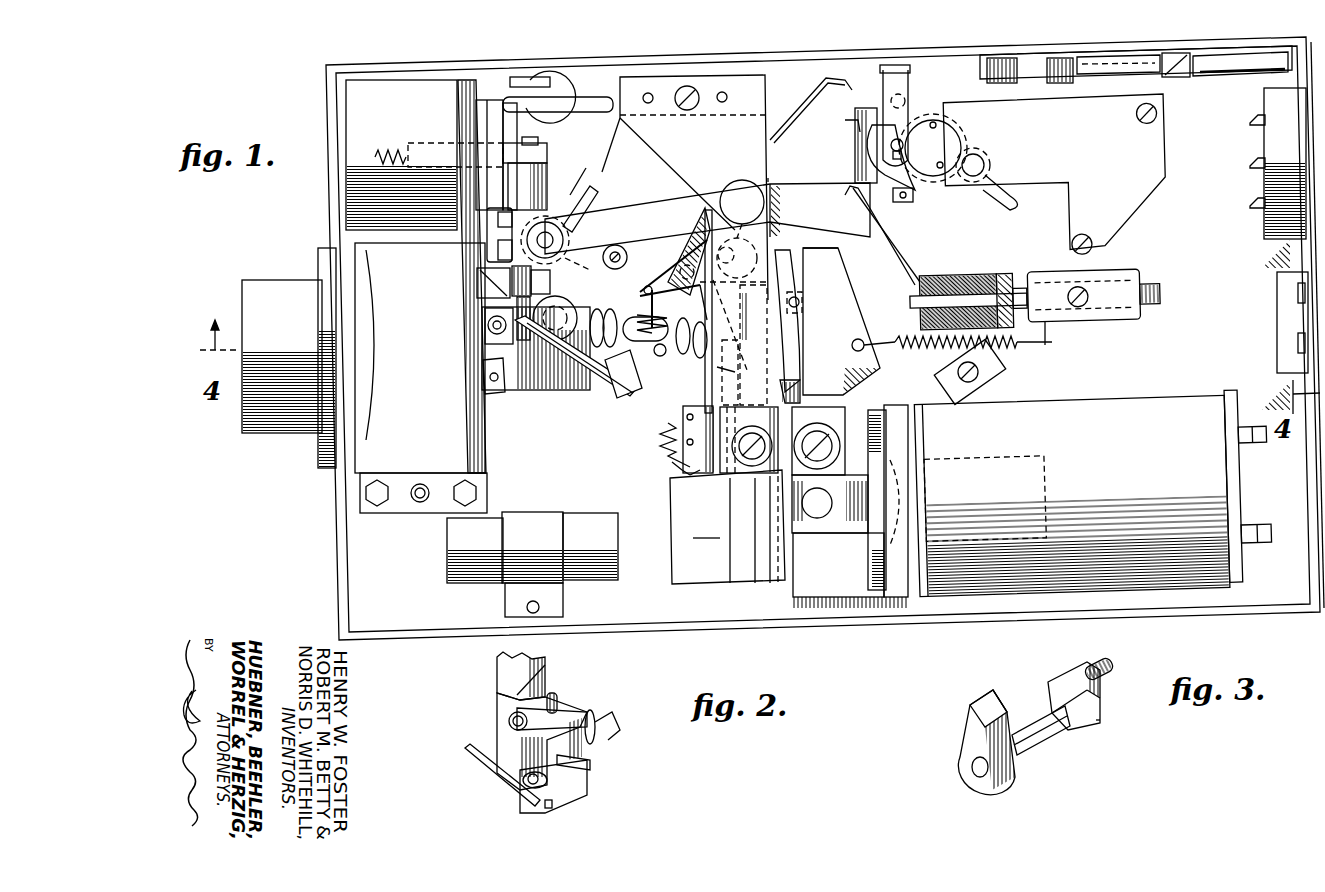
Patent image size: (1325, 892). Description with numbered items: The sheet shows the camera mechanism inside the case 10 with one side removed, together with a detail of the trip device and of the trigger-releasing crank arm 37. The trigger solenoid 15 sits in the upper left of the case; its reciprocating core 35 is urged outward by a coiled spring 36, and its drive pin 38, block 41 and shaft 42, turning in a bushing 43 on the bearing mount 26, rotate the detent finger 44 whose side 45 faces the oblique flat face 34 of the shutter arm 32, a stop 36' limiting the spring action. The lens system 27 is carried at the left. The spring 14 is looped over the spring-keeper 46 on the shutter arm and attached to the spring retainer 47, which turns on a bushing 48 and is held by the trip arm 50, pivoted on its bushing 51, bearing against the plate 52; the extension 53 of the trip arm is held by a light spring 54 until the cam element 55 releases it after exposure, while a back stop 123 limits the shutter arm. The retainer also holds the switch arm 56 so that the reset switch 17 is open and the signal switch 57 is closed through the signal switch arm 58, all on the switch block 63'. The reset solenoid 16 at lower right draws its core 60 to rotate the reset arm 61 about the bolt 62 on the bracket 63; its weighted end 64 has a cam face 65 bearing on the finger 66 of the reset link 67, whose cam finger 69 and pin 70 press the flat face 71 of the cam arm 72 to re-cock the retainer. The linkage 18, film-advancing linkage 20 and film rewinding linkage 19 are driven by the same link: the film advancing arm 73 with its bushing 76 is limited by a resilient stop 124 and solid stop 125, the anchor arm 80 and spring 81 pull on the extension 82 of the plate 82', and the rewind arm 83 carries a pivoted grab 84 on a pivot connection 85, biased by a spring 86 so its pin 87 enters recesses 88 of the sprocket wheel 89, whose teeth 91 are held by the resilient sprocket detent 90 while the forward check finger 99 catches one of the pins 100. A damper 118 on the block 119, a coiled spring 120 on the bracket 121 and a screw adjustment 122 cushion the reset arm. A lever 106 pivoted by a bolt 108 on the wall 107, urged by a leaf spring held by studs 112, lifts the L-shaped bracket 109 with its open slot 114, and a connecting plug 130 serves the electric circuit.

In FIG. 1, the case 10 is at (1115, 618).
In FIG. 1, the spring 14 is at (594, 310).
In FIG. 1, the trigger solenoid 15 is at (355, 178).
In FIG. 1, the reset solenoid 16 is at (1205, 570).
In FIG. 1, the reset switch 17 is at (778, 412).
In FIG. 1, the linkage 18 is at (730, 188).
In FIG. 1, the film rewinding linkage 19 is at (965, 130).
In FIG. 1, the film-advancing linkage 20 is at (592, 190).
In FIG. 1, the bearing mount 26 is at (470, 462).
In FIG. 1, the lens system 27 is at (300, 433).
In FIG. 1, the shutter arm 32 is at (616, 430).
In FIG. 1, the oblique flat face 34 is at (482, 340).
In FIG. 1, the reciprocating core 35 is at (508, 98).
In FIG. 1, the coiled spring 36 is at (396, 139).
In FIG. 1, the stop 36' is at (579, 265).
In FIG. 1, the crank arm 37 is at (538, 140).
In FIG. 3, the crank arm 37 is at (1098, 722).
In FIG. 3, the drive pin 38 is at (1098, 658).
In FIG. 1, the block 41 is at (547, 180).
In FIG. 3, the block 41 is at (1075, 675).
In FIG. 3, the shaft 42 is at (1040, 745).
In FIG. 1, the bushing 43 is at (490, 248).
In FIG. 1, the detent finger 44 is at (478, 280).
In FIG. 3, the detent finger 44 is at (1000, 700).
In FIG. 1, the side 45 is at (510, 295).
In FIG. 3, the side 45 is at (965, 722).
In FIG. 1, the spring-keeper 46 is at (560, 306).
In FIG. 1, the spring retainer 47 is at (717, 367).
In FIG. 2, the spring retainer 47 is at (612, 722).
In FIG. 2, the bushing 48 is at (497, 735).
In FIG. 1, the trip arm 50 is at (710, 320).
In FIG. 2, the trip arm 50 is at (570, 790).
In FIG. 1, the pivotally mounted bushing 51 is at (650, 425).
In FIG. 2, the pivotally mounted bushing 51 is at (552, 806).
In FIG. 1, the plate 52 is at (680, 312).
In FIG. 2, the plate 52 is at (592, 763).
In FIG. 1, the extension 53 is at (640, 314).
In FIG. 2, the extension 53 is at (470, 752).
In FIG. 1, the light spring 54 is at (487, 320).
In FIG. 1, the cam element 55 is at (620, 398).
In FIG. 1, the switch arm 56 is at (795, 338).
In FIG. 1, the signal switch 57 is at (825, 422).
In FIG. 1, the signal switch arm 58 is at (800, 378).
In FIG. 1, the reciprocating core 60 is at (857, 600).
In FIG. 1, the reset arm 61 is at (848, 432).
In FIG. 1, the bolt 62 is at (825, 505).
In FIG. 1, the bracket 63 is at (739, 561).
In FIG. 1, the switch block 63' is at (706, 528).
In FIG. 1, the weighted end 64 is at (836, 266).
In FIG. 1, the cam face 65 is at (835, 250).
In FIG. 1, the finger 66 is at (802, 313).
In FIG. 1, the reset link 67 is at (772, 178).
In FIG. 1, the cam finger 69 is at (745, 230).
In FIG. 2, the cam finger 69 is at (560, 700).
In FIG. 2, the pin 70 is at (560, 700).
In FIG. 1, the flat face 71 is at (704, 240).
In FIG. 2, the flat face 71 is at (545, 690).
In FIG. 1, the cam arm 72 is at (670, 240).
In FIG. 2, the cam arm 72 is at (500, 705).
In FIG. 1, the film advancing arm 73 is at (640, 208).
In FIG. 1, the bushing 76 is at (583, 170).
In FIG. 1, the anchor arm 80 is at (626, 260).
In FIG. 1, the spring 81 is at (660, 448).
In FIG. 1, the extension 82 is at (666, 479).
In FIG. 1, the plate 82' is at (671, 491).
In FIG. 1, the rewind arm 83 is at (793, 210).
In FIG. 1, the pivoted grab 84 is at (1000, 185).
In FIG. 1, the pivot connection 85 is at (985, 160).
In FIG. 1, the spring 86 is at (955, 246).
In FIG. 1, the pin 87 is at (945, 112).
In FIG. 1, the recesses 88 is at (872, 143).
In FIG. 1, the sprocket wheel 89 is at (888, 148).
In FIG. 1, the resilient sprocket detent 90 is at (915, 280).
In FIG. 1, the teeth 91 is at (856, 200).
In FIG. 1, the forward check finger 99 is at (788, 70).
In FIG. 1, the pins 100 is at (845, 121).
In FIG. 1, the lever 106 is at (1225, 60).
In FIG. 1, the wall 107 is at (1128, 56).
In FIG. 1, the bolt 108 is at (1180, 55).
In FIG. 1, the L-shaped bracket 109 is at (895, 68).
In FIG. 1, the studs 112 is at (1005, 58).
In FIG. 1, the open slot 114 is at (915, 198).
In FIG. 1, the damper 118 is at (1010, 272).
In FIG. 1, the block 119 is at (1130, 272).
In FIG. 1, the coiled spring 120 is at (915, 350).
In FIG. 1, the bracket 121 is at (1052, 345).
In FIG. 1, the screw adjustment 122 is at (1165, 290).
In FIG. 1, the back stop 123 is at (500, 395).
In FIG. 1, the resilient stop 124 is at (580, 78).
In FIG. 1, the solid stop 125 is at (633, 246).
In FIG. 1, the connecting plug 130 is at (1262, 185).